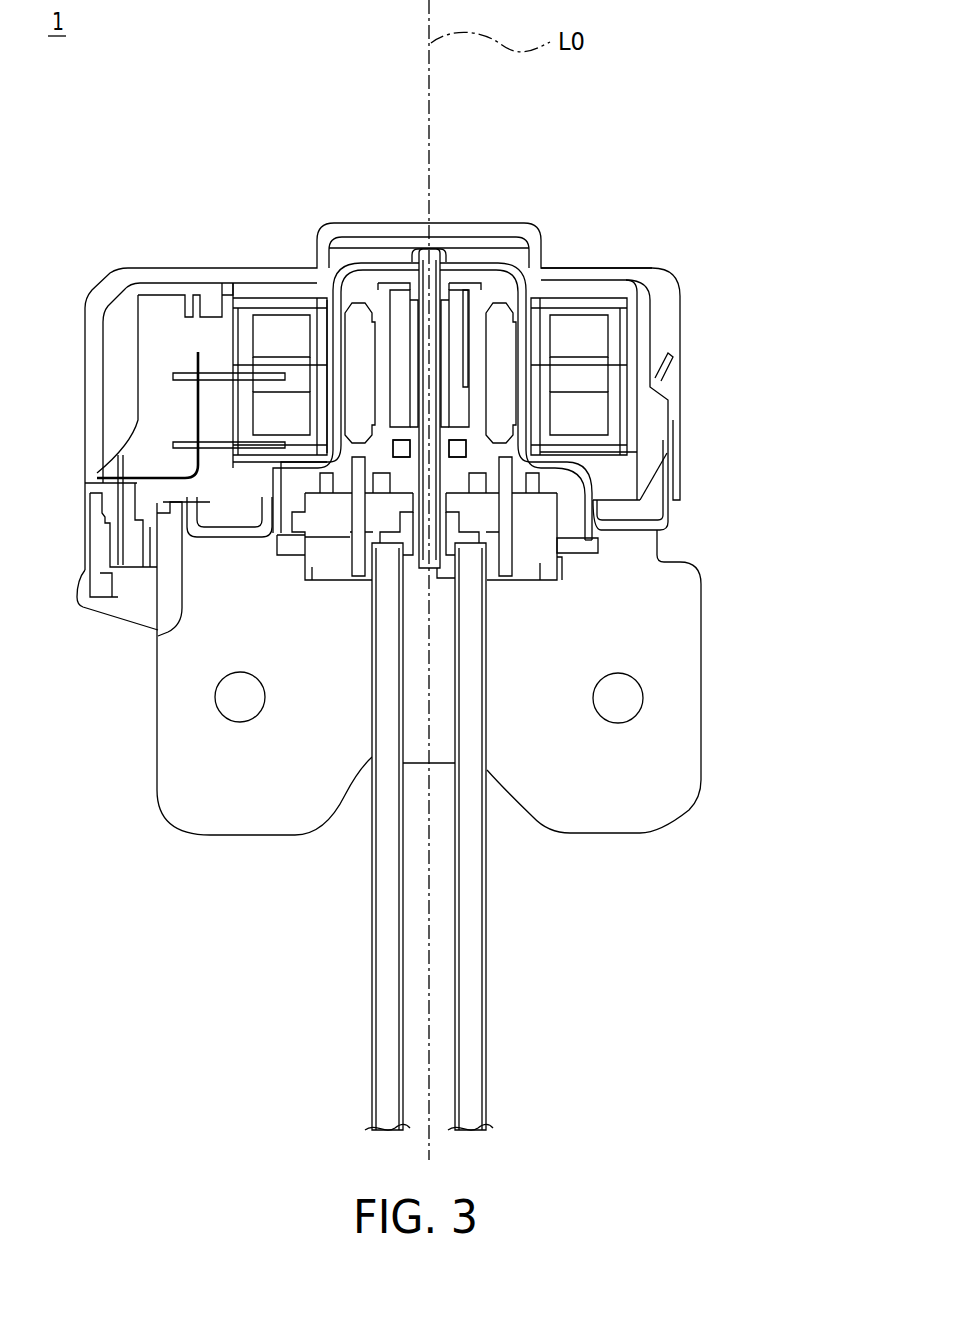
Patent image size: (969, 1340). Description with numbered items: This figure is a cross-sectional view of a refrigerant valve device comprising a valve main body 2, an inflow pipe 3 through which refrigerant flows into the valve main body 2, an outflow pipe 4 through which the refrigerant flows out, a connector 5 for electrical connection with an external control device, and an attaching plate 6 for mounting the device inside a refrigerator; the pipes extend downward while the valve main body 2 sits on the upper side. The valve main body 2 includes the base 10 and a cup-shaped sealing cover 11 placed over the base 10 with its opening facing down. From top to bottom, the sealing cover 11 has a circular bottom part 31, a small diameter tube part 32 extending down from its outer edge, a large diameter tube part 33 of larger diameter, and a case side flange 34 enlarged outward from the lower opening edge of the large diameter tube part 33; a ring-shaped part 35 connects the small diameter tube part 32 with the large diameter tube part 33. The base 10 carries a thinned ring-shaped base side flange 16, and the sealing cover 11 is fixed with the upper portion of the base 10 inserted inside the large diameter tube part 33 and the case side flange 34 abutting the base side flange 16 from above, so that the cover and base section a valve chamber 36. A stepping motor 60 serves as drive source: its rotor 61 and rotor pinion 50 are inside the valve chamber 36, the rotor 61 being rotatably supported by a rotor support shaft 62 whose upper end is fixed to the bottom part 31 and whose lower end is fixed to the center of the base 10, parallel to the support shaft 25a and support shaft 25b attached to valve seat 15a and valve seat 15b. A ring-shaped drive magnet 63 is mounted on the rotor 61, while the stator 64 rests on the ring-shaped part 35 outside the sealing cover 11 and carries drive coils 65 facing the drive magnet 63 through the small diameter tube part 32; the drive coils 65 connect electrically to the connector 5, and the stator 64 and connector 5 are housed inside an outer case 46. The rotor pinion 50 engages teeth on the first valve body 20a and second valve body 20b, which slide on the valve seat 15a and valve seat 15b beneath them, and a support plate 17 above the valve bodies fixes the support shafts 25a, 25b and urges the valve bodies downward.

The valve main body 2 is at (678, 254).
The inflow pipe 3 is at (385, 1017).
The outflow pipe 4 is at (475, 1017).
The connector 5 is at (82, 612).
The attaching plate 6 is at (660, 783).
The base 10 is at (582, 550).
The sealing cover 11 is at (471, 257).
The valve seat 15a is at (540, 563).
The valve seat 15b is at (312, 567).
The base side flange 16 is at (172, 655).
The support plate 17 is at (517, 470).
The first valve body 20a is at (488, 517).
The second valve body 20b is at (342, 517).
The support shaft 25a is at (507, 463).
The support shaft 25b is at (363, 577).
The bottom part 31 is at (395, 265).
The small diameter tube part 32 is at (338, 303).
The large diameter tube part 33 is at (270, 515).
The case side flange 34 is at (262, 537).
The ring-shaped part 35 is at (297, 462).
The valve chamber 36 is at (300, 530).
The outer case 46 is at (585, 273).
The rotor pinion 50 is at (417, 505).
The stepping motor 60 is at (642, 373).
The rotor 61 is at (517, 379).
The rotor support shaft 62 is at (427, 253).
The drive magnet 63 is at (360, 373).
The stator 64 is at (613, 412).
The drive coils 65 is at (276, 338).